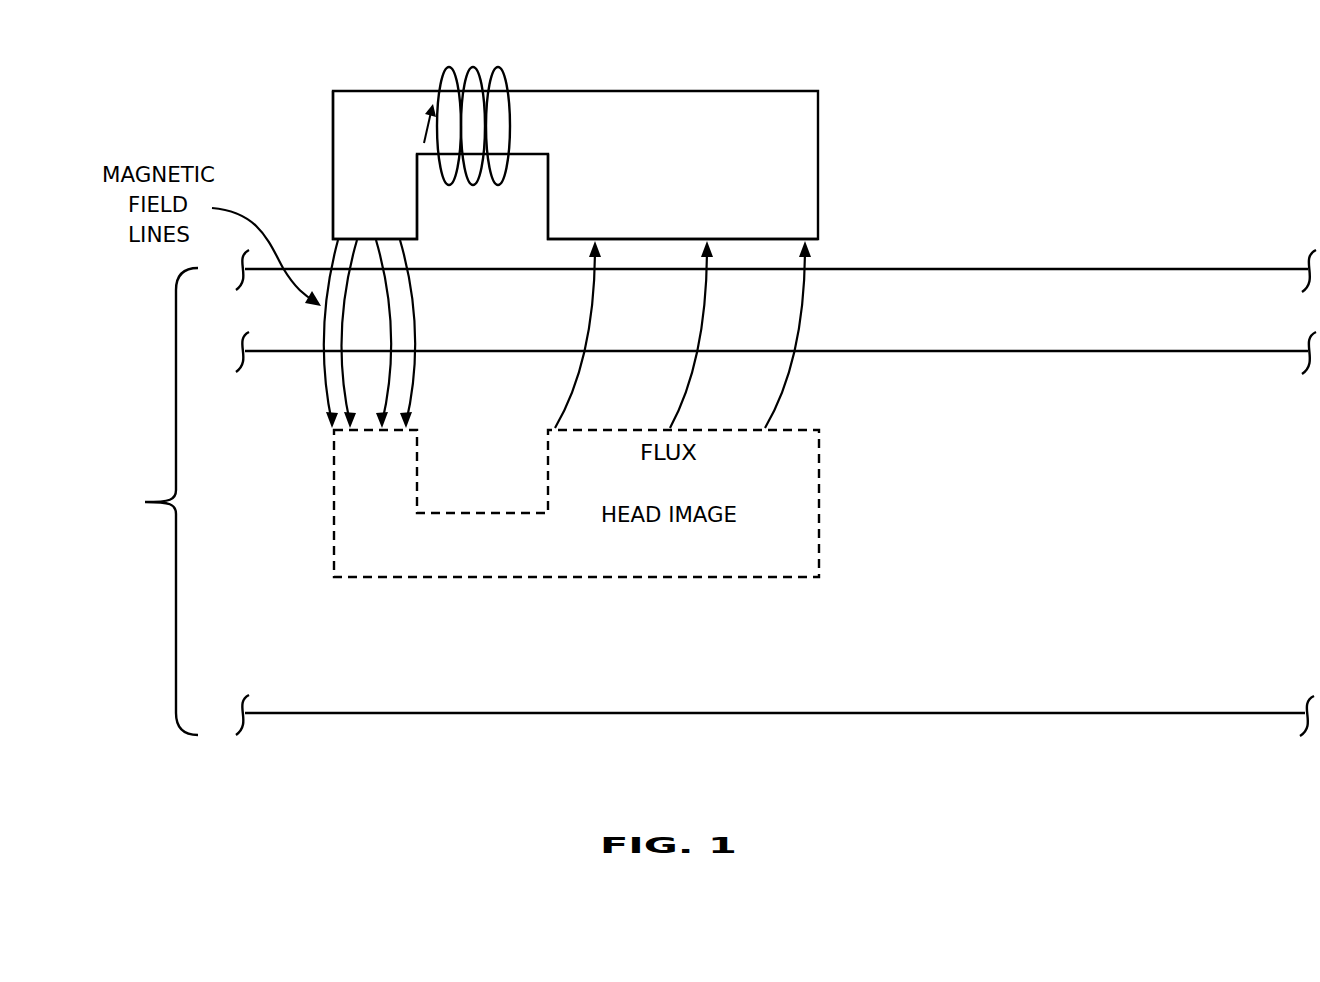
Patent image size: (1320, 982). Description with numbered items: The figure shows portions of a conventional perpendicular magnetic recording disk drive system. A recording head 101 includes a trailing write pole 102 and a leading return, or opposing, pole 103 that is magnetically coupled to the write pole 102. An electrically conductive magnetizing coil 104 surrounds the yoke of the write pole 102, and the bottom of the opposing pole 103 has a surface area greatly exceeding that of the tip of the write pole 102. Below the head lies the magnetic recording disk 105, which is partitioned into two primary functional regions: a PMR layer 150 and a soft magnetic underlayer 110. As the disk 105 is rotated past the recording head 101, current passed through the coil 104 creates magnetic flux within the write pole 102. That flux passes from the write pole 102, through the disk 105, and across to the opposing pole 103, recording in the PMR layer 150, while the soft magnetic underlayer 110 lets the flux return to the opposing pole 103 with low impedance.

The recording head 101 is at (728, 144).
The write pole 102 is at (392, 234).
The opposing pole 103 is at (760, 229).
The magnetizing coil 104 is at (553, 61).
The magnetic recording disk 105 is at (707, 493).
The soft magnetic underlayer 110 is at (1140, 686).
The PMR layer 150 is at (1318, 331).